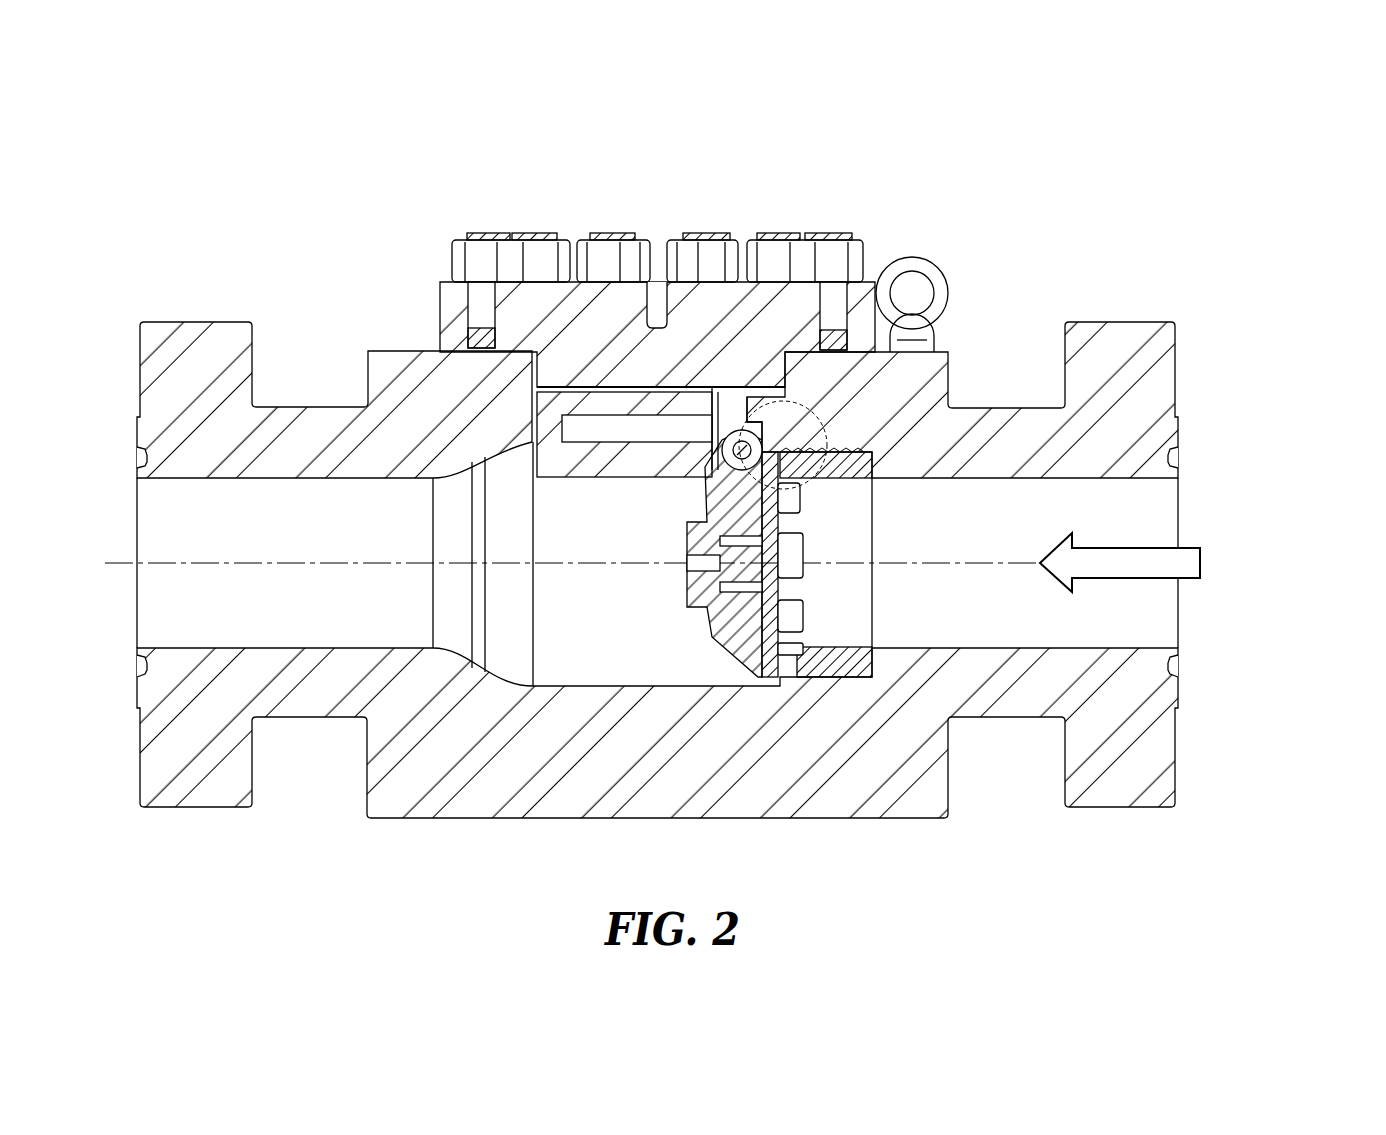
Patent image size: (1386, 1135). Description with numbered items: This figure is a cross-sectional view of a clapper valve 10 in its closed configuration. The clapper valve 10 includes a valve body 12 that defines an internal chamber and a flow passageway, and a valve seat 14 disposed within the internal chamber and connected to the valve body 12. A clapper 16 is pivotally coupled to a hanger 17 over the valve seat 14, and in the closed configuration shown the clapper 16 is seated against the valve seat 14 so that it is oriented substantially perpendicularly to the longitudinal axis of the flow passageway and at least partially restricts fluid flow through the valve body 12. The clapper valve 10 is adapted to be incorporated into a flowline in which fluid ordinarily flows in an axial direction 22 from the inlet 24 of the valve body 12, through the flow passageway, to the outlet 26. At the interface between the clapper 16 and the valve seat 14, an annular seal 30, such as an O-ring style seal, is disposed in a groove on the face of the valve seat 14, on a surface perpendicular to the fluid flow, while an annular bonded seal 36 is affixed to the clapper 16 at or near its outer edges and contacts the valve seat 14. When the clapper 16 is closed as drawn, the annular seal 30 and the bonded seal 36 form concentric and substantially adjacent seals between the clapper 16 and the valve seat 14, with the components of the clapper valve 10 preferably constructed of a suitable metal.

The clapper valve 10 is at (992, 116).
The valve body 12 is at (740, 818).
The valve seat 14 is at (878, 518).
The clapper 16 is at (703, 488).
The hanger 17 is at (736, 421).
The axial direction 22 is at (1204, 565).
The inlet 24 is at (1174, 626).
The outlet 26 is at (136, 591).
The annular seal 30 is at (774, 456).
The annular bonded seal 36 is at (766, 447).